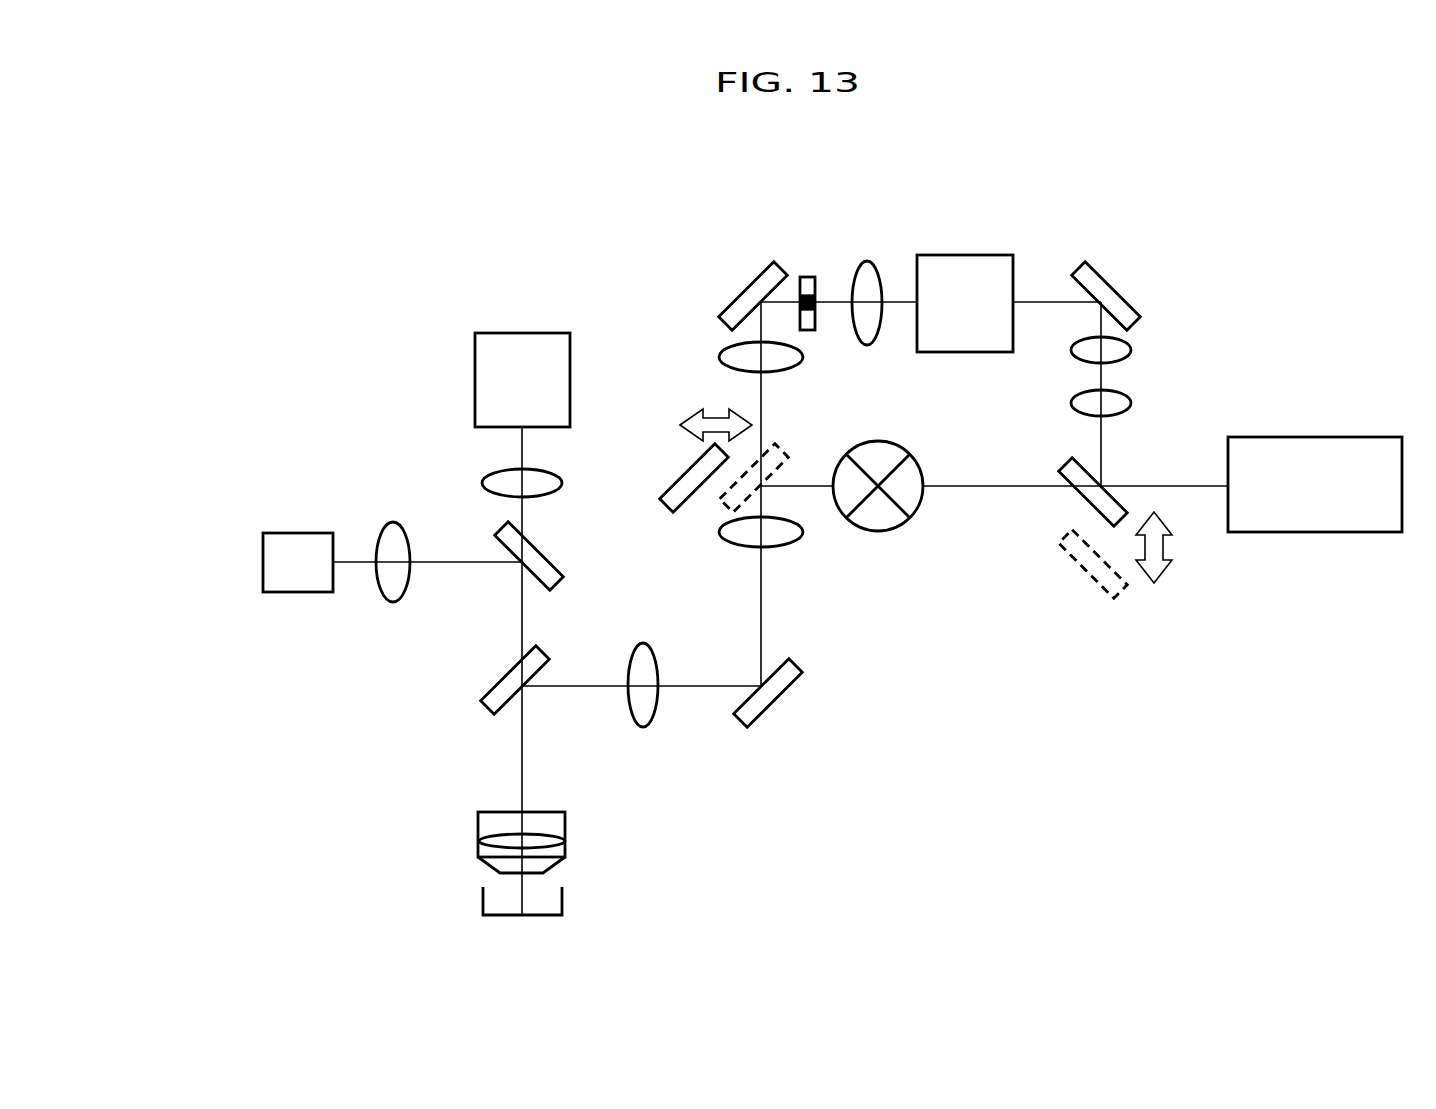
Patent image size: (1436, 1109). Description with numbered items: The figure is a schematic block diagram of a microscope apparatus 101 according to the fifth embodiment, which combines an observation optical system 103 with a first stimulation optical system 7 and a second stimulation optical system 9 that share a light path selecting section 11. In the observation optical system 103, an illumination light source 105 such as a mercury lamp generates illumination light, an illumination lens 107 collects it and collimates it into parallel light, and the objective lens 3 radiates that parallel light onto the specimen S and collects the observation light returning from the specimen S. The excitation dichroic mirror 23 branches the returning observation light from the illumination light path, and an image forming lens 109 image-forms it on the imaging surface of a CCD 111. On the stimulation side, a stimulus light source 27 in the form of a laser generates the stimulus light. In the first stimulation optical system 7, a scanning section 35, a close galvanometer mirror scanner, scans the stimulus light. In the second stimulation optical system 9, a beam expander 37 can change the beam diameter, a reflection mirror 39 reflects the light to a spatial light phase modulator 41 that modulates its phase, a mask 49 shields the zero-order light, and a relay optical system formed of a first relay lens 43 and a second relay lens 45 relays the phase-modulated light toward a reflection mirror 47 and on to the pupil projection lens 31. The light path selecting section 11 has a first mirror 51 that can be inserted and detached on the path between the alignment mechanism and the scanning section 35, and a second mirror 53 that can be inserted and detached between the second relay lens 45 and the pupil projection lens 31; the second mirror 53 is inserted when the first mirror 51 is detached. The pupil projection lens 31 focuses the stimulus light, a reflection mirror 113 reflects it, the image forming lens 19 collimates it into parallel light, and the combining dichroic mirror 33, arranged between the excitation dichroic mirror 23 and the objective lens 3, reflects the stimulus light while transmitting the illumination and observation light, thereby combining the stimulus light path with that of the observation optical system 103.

The microscope apparatus 101 is at (1347, 160).
The second stimulation optical system 9 is at (1070, 195).
The first stimulation optical system 7 is at (962, 450).
The light path selecting section 11 is at (634, 455).
The observation optical system 103 is at (322, 449).
The reflection mirror 47 is at (748, 283).
The mask 49 is at (809, 277).
The first relay lens 43 is at (866, 262).
The spatial light phase modulator (SLM) 41 is at (953, 255).
The reflection mirror 39 is at (1121, 290).
The beam expander 37 is at (1133, 337).
The scanning section 35 is at (877, 441).
The first mirror 51 is at (1073, 495).
The stimulus light source 27 is at (1310, 437).
The second mirror 53 is at (688, 468).
The second relay lens 45 is at (720, 357).
The pupil projection lens 31 is at (737, 548).
The reflection mirror 113 is at (777, 703).
The CCD 111 is at (521, 333).
The image forming lens 109 is at (482, 483).
The excitation dichroic mirror 23 is at (560, 588).
The illumination light source 105 is at (263, 562).
The illumination lens 107 is at (393, 603).
The combining dichroic mirror 33 is at (482, 703).
The image forming lens 19 is at (643, 727).
The objective lens 3 is at (478, 833).
The specimen S is at (483, 901).